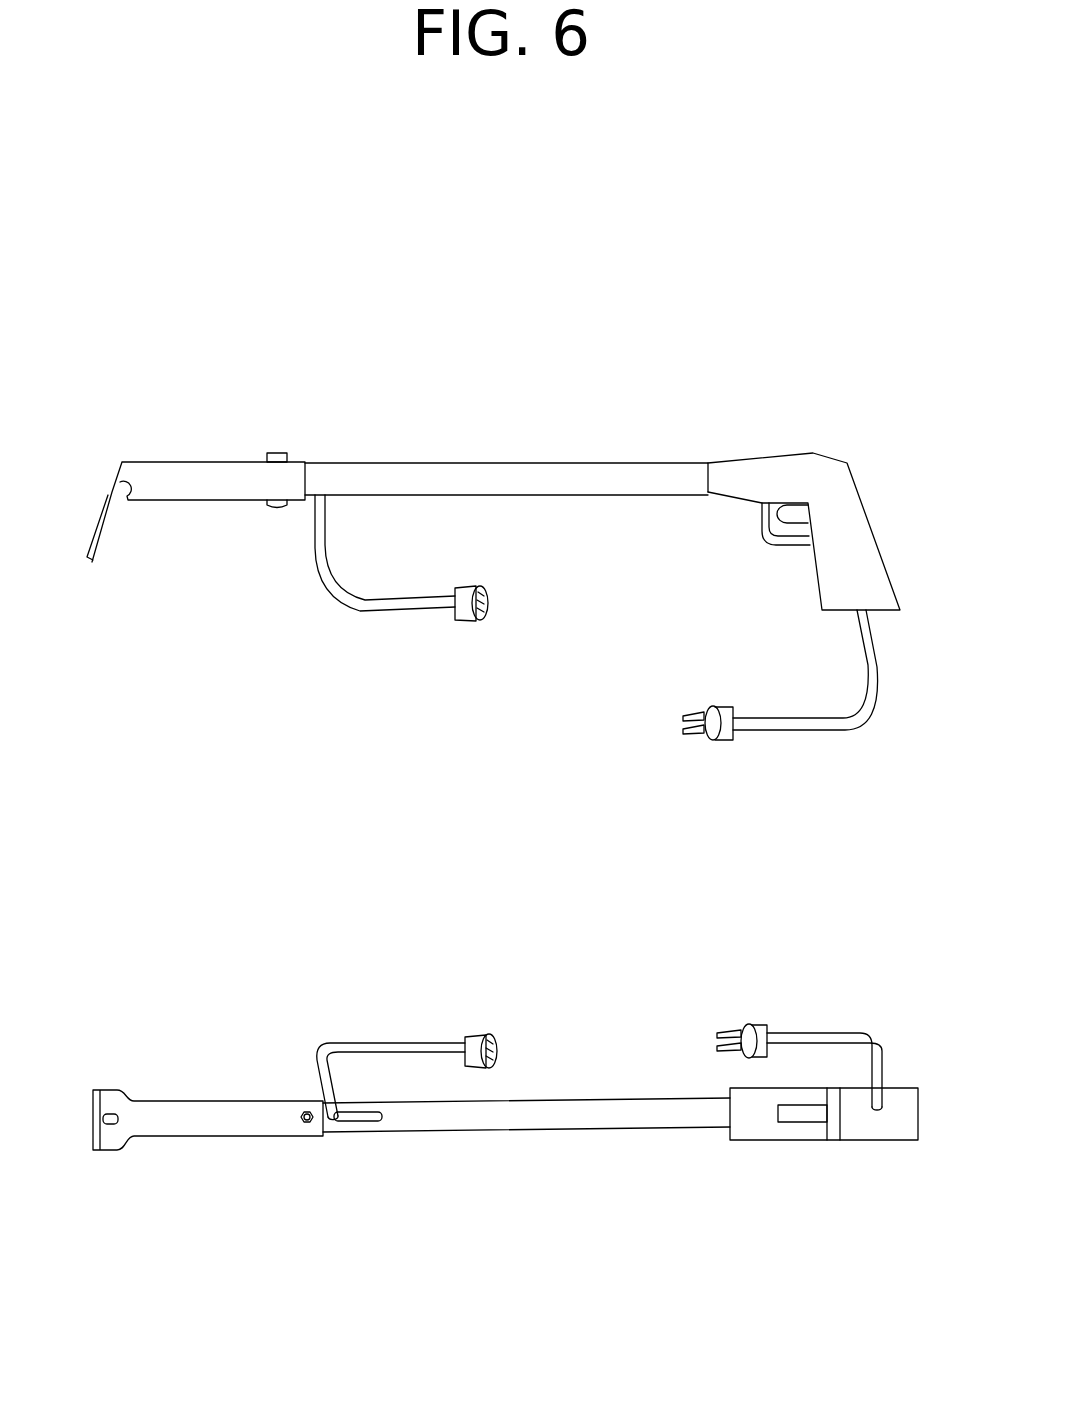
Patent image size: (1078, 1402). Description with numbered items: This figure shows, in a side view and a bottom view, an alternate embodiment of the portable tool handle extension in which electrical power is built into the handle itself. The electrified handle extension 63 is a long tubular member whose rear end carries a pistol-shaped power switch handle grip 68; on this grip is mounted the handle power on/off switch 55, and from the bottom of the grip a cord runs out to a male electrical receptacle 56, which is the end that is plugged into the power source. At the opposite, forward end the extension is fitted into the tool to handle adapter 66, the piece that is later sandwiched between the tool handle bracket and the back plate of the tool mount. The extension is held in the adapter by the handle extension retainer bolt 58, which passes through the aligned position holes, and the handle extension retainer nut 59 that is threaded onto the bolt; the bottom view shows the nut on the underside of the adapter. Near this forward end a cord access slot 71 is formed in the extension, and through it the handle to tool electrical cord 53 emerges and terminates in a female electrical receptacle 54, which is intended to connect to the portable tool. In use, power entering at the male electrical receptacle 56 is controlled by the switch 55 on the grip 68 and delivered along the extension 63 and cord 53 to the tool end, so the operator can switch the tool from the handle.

The handle to tool electrical cord 53 is at (348, 610).
The female electrical receptacle 54 is at (467, 621).
The handle power on/off switch 55 is at (783, 518).
The male electrical receptacle 56 is at (722, 742).
The handle extension retainer bolt 58 is at (279, 447).
The handle extension retainer nut 59 is at (303, 1124).
The electrified handle extension 63 is at (497, 460).
The tool to handle adapter 66 is at (175, 455).
The power switch handle grip 68 is at (762, 452).
The cord access slot 71 is at (362, 1122).